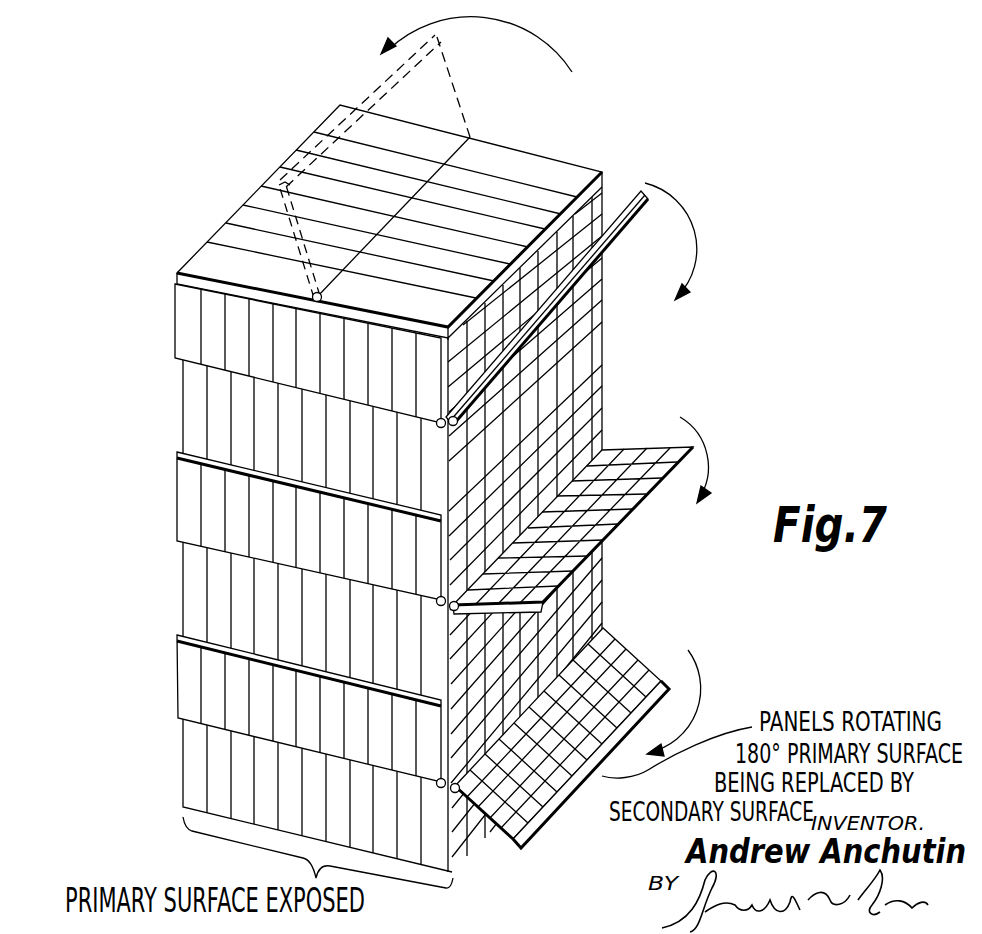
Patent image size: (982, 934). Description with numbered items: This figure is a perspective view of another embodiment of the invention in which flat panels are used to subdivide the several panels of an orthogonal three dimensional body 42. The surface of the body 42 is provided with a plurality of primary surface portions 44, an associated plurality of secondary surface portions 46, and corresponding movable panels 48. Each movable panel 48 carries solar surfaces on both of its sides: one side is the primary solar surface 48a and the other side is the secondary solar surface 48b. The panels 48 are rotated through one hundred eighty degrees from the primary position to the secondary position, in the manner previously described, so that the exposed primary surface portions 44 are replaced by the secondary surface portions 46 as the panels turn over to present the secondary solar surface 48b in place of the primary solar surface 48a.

The body 42 is at (211, 228).
The primary surface portions 44 is at (188, 389).
The secondary surface portions 46 is at (603, 202).
The movable panels 48 is at (447, 100).
The primary solar surface 48a is at (628, 238).
The secondary solar surface 48b is at (653, 452).